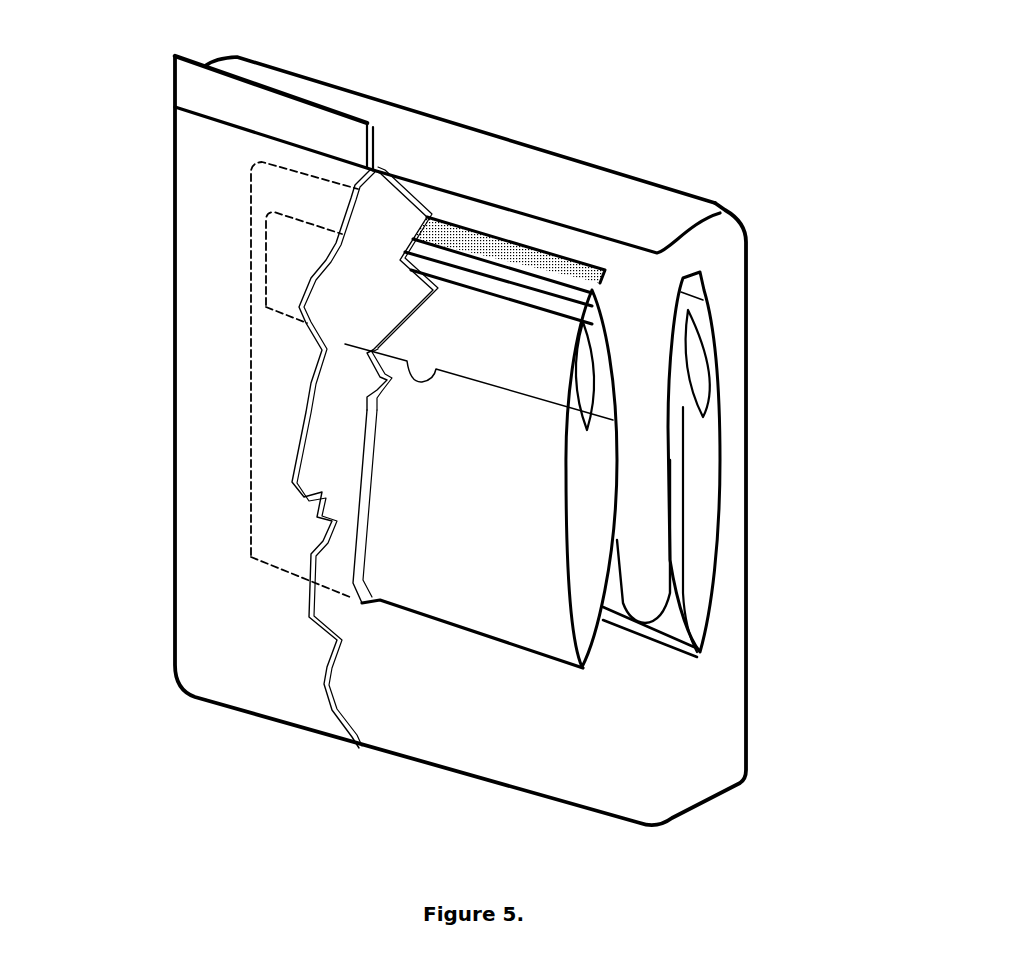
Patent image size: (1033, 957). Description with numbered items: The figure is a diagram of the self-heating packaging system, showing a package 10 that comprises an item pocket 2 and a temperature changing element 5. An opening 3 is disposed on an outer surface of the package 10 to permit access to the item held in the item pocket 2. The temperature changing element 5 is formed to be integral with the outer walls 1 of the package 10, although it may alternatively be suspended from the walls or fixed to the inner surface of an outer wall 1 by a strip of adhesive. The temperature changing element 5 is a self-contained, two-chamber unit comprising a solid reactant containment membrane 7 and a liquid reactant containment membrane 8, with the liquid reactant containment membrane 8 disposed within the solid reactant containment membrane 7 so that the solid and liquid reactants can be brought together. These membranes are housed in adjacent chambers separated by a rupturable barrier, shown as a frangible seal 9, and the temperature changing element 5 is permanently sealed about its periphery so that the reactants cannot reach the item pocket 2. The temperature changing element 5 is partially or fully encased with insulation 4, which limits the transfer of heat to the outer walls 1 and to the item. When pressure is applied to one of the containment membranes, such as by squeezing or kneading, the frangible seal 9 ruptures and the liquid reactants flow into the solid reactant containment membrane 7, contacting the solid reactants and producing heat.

The outer walls 1 is at (710, 703).
The item pocket 2 is at (627, 490).
The opening 3 is at (502, 172).
The insulation 4 is at (317, 367).
The temperature changing element 5 is at (712, 399).
The solid reactant containment membrane 7 is at (487, 609).
The liquid reactant containment membrane 8 is at (443, 330).
The frangible seal 9 is at (380, 378).
The package 10 is at (699, 121).